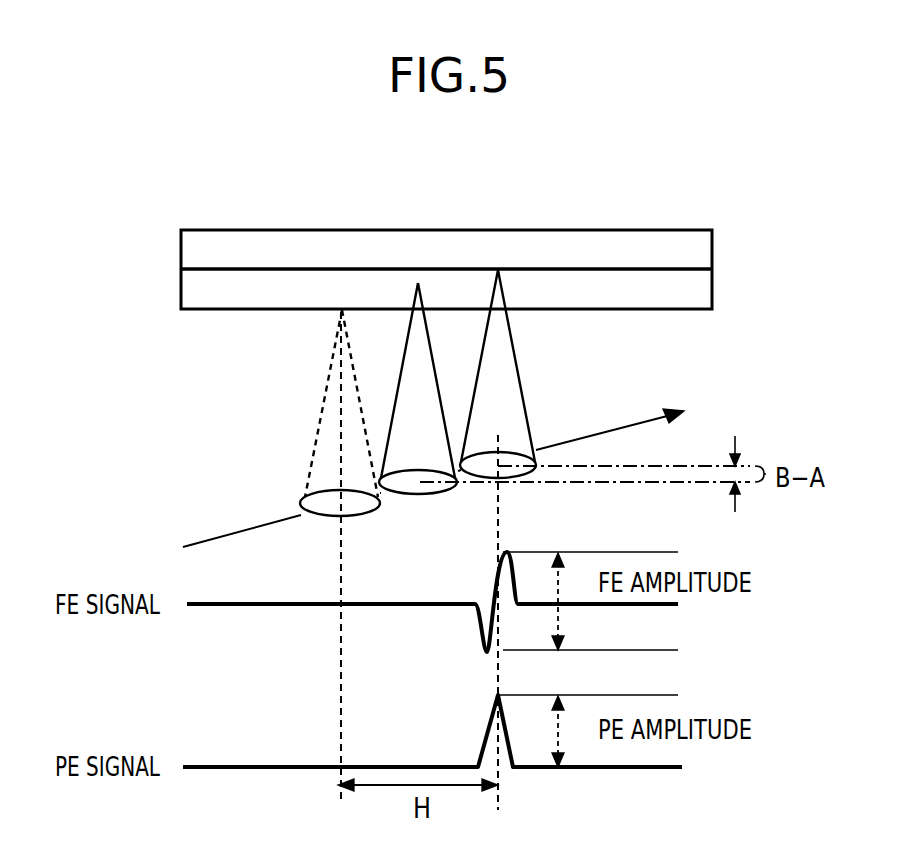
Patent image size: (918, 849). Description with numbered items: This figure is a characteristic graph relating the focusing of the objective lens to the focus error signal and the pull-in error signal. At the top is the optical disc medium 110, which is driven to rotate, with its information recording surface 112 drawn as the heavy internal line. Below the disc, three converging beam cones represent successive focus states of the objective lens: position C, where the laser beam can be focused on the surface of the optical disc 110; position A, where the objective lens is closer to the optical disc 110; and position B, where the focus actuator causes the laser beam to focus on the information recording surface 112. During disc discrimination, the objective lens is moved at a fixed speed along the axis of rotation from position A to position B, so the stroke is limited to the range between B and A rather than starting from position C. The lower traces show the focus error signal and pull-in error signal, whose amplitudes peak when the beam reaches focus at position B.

The optical disc medium 110 is at (687, 229).
The information recording surface 112 is at (576, 267).
The position A is at (418, 408).
The position B is at (503, 394).
The position C is at (340, 431).